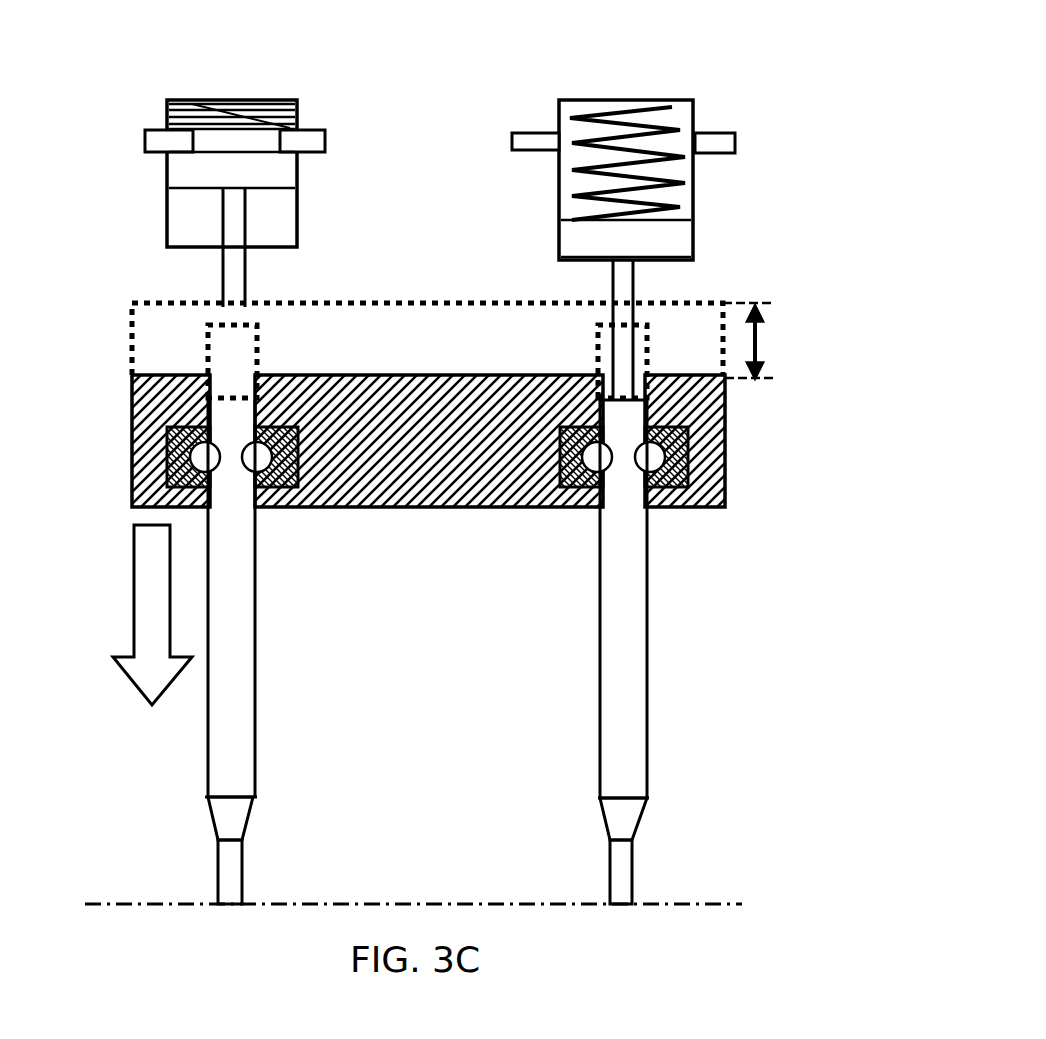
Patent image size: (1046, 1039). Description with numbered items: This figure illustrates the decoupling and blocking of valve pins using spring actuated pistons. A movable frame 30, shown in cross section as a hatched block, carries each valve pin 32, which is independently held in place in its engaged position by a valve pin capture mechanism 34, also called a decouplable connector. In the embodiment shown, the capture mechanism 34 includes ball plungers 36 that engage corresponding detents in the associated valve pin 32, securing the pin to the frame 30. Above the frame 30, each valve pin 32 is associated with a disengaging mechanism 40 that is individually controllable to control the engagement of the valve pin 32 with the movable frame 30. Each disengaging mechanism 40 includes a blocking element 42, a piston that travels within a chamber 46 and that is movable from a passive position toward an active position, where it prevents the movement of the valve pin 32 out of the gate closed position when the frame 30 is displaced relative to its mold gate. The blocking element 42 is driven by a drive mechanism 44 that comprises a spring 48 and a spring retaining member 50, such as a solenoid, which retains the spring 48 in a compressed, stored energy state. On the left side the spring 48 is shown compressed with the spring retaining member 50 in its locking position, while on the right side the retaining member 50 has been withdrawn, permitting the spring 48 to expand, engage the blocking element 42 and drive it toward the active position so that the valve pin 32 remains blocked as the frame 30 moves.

The movable frame 30 is at (210, 377).
The valve pin 32 is at (240, 612).
The valve pin capture mechanism 34 is at (190, 419).
The ball plunger 36 is at (283, 485).
The disengaging mechanism 40 is at (460, 205).
The blocking element 42 is at (273, 177).
The drive mechanism 44 is at (322, 198).
The chamber 46 is at (283, 235).
The spring 48 is at (260, 100).
The spring retaining member 50 is at (158, 142).